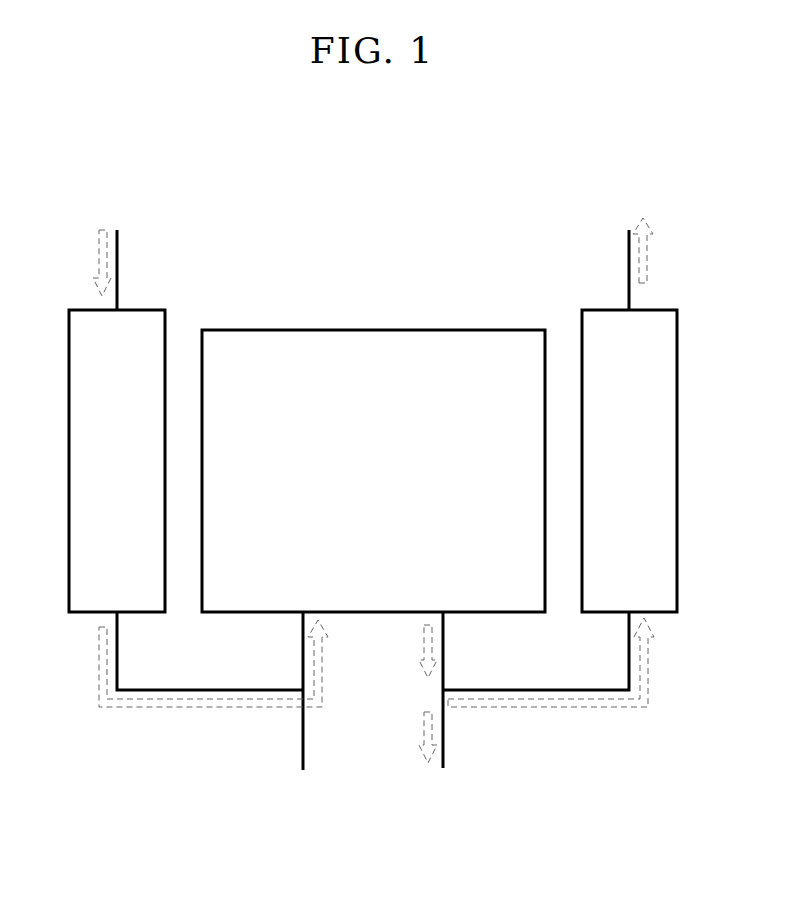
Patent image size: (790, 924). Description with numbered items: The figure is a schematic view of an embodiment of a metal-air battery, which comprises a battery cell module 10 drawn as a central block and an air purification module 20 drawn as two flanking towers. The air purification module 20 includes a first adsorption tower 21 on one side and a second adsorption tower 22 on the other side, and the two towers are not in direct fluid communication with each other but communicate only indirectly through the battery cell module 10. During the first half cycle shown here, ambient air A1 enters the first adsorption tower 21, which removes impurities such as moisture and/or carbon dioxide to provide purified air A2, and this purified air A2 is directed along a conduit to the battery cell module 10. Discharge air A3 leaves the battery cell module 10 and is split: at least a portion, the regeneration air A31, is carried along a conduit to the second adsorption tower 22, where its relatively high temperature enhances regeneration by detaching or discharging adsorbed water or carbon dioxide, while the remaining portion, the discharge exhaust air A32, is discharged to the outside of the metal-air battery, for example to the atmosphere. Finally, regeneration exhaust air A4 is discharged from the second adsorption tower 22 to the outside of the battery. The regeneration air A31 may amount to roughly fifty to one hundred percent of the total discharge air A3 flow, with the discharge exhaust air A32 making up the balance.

The battery cell module 10 is at (373, 329).
The air purification module 20 is at (257, 185).
The first adsorption tower 21 is at (165, 300).
The second adsorption tower 22 is at (580, 300).
The ambient air A1 is at (95, 241).
The purified air A2 is at (216, 680).
The discharge air A3 is at (416, 651).
The regeneration air A31 is at (555, 679).
The discharge exhaust air A32 is at (419, 752).
The regeneration exhaust air A4 is at (649, 236).